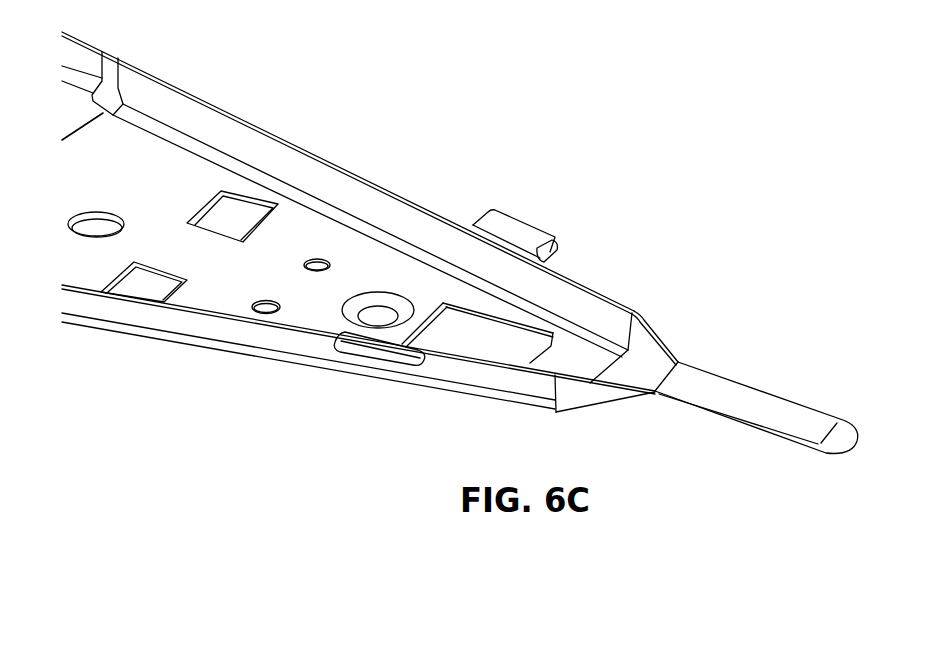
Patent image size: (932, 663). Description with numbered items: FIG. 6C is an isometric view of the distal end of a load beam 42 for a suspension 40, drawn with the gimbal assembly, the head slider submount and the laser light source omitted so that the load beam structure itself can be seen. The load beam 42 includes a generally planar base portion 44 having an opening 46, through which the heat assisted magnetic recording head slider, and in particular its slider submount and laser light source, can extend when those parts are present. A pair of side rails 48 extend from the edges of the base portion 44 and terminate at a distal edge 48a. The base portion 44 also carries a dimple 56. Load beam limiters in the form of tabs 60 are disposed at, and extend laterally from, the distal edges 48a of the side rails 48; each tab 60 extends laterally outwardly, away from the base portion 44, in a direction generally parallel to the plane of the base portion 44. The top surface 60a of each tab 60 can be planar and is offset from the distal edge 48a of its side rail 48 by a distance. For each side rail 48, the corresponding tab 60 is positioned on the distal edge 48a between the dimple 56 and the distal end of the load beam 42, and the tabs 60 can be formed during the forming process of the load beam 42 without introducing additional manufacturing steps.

The suspension 40 is at (507, 123).
The load beam 42 is at (202, 105).
The base portion 44 is at (140, 177).
The opening 46 is at (437, 317).
The side rails 48 is at (377, 204).
The distal edge 48a is at (315, 158).
The dimple 56 is at (341, 307).
The tab 60 is at (535, 227).
The top surface 60a is at (540, 239).